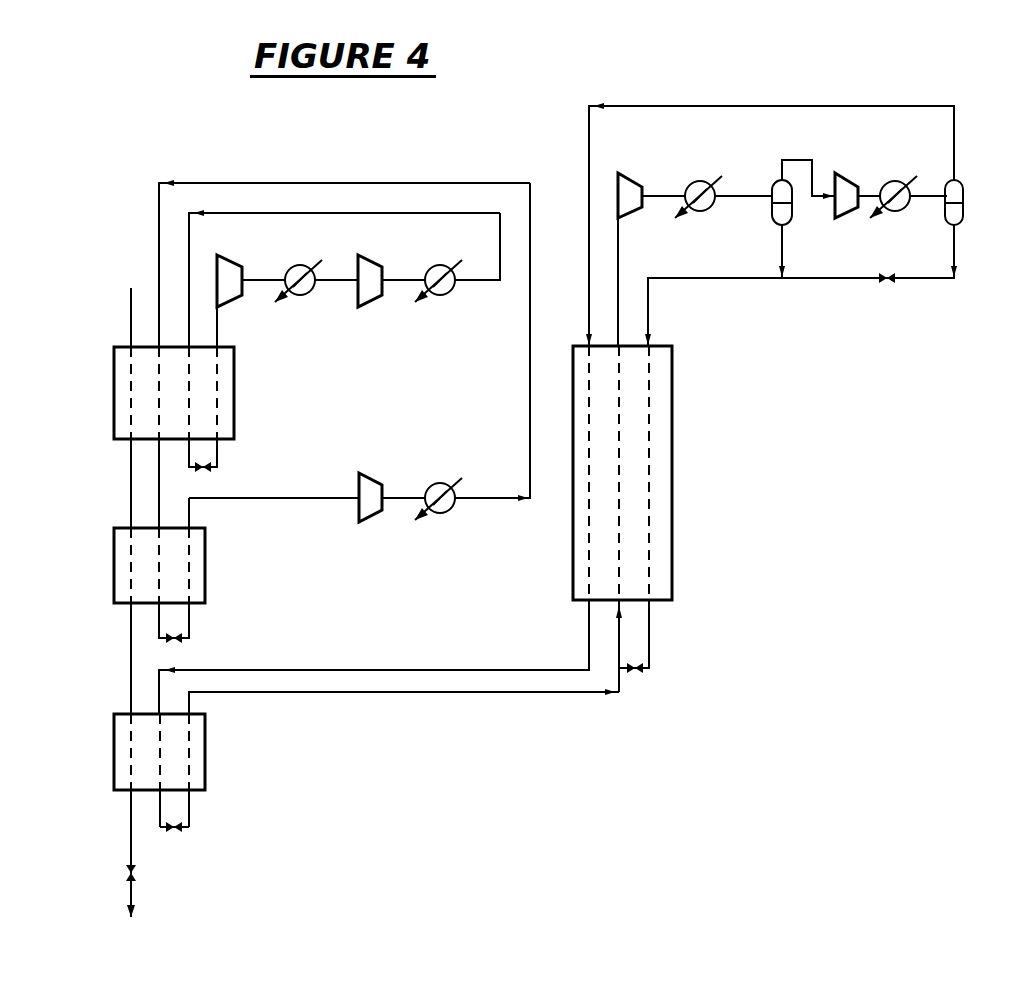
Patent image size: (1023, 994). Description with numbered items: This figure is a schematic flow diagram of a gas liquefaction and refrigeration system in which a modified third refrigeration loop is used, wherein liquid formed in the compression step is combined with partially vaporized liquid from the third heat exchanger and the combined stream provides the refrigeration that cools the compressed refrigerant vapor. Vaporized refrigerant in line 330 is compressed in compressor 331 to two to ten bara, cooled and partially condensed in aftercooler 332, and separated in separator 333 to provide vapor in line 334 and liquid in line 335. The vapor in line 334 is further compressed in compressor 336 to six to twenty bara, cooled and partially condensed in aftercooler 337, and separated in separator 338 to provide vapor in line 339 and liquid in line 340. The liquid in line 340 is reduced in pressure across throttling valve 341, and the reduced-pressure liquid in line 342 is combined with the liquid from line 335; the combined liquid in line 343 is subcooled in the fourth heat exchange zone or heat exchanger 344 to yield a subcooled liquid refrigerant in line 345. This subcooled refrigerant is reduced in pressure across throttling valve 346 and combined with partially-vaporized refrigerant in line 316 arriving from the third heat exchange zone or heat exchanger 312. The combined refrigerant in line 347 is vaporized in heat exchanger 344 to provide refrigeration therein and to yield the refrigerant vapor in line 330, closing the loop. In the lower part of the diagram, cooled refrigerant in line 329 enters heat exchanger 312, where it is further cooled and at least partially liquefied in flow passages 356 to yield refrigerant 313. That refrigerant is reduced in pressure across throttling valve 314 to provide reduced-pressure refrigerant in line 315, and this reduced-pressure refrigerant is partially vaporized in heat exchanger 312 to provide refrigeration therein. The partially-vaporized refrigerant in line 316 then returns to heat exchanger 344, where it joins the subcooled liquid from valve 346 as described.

The third heat exchange zone or heat exchanger 312 is at (114, 745).
The refrigerant 313 is at (160, 815).
The throttling valve 314 is at (182, 835).
The line 315 is at (205, 793).
The line 316 is at (468, 693).
The line 329 is at (355, 670).
The line 330 is at (640, 263).
The compressor 331 is at (622, 172).
The aftercooler 332 is at (700, 182).
The separator 333 is at (815, 218).
The line 334 is at (805, 156).
The line 335 is at (780, 248).
The compressor 336 is at (845, 178).
The aftercooler 337 is at (895, 212).
The separator 338 is at (988, 195).
The line 339 is at (770, 103).
The line 340 is at (985, 241).
The throttling valve 341 is at (895, 282).
The line 342 is at (828, 280).
The line 343 is at (745, 278).
The fourth heat exchange zone or heat exchanger 344 is at (697, 530).
The line 345 is at (675, 630).
The throttling valve 346 is at (643, 675).
The line 347 is at (619, 655).
The flow passages 356 is at (160, 758).